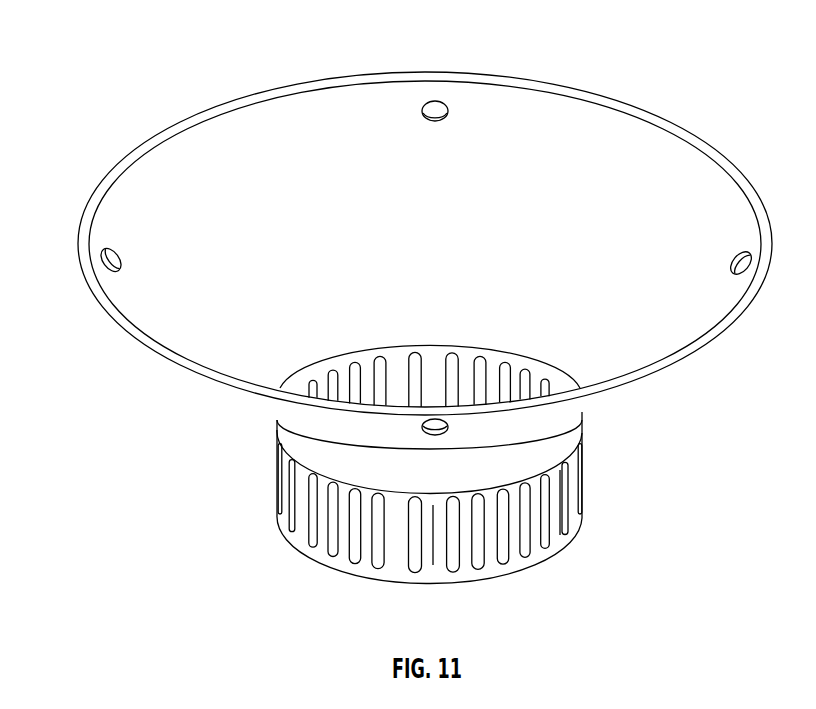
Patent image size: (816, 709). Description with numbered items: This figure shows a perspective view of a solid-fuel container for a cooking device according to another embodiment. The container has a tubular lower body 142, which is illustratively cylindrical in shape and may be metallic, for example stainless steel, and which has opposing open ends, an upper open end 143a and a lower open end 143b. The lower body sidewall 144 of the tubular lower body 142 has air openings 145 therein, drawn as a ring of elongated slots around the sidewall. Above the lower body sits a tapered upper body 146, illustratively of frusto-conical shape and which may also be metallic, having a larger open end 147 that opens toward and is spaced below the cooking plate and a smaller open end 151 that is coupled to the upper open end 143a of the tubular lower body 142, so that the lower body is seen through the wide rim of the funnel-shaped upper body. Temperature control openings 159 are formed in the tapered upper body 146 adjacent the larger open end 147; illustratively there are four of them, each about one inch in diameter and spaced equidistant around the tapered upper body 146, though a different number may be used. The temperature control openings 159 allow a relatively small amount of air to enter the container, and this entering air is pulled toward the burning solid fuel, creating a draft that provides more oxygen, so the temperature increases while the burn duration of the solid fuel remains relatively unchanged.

The tubular lower body 142 is at (277, 468).
The upper open end 143a is at (581, 434).
The lower open end 143b is at (567, 540).
The lower body sidewall 144 is at (433, 530).
The air openings 145 is at (412, 533).
The tapered upper body 146 is at (153, 277).
The larger open end 147 is at (143, 147).
The smaller open end 151 is at (276, 378).
The temperature control openings 159 is at (441, 108).